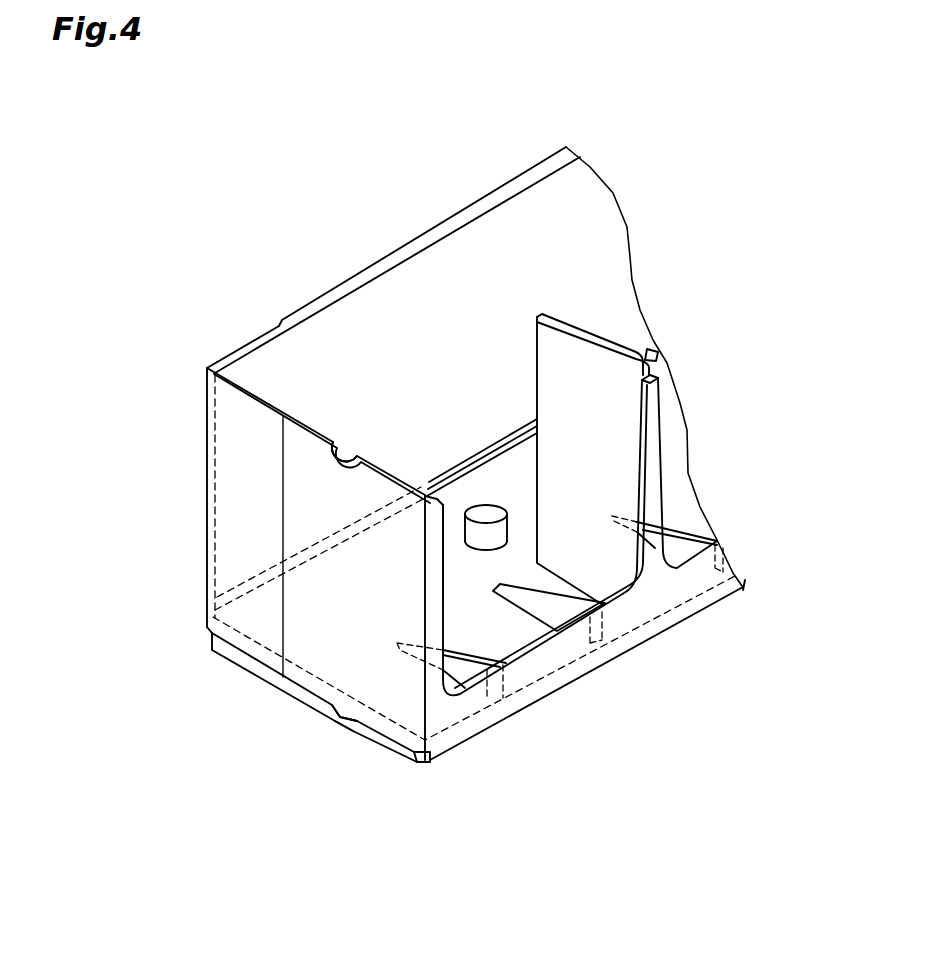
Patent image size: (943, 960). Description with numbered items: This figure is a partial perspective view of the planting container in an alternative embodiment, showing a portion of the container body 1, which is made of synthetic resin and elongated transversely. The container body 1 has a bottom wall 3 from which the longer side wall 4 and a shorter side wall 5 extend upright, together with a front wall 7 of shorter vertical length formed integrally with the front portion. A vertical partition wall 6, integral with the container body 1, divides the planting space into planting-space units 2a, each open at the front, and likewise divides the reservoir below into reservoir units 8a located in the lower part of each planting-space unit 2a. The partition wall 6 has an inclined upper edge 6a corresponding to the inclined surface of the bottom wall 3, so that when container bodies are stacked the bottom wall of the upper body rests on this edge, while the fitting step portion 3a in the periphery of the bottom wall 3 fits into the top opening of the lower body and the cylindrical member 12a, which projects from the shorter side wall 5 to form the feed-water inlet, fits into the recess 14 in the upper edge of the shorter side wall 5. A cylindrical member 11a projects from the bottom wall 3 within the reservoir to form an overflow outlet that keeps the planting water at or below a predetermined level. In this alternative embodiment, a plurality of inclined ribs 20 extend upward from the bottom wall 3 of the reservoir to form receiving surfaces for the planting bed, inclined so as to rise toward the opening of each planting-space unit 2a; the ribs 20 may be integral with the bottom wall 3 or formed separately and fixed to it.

The container body 1 is at (725, 643).
The planting-space unit 2a is at (505, 620).
The bottom wall 3 is at (533, 632).
The fitting step portion 3a is at (418, 763).
The longer side wall 4 is at (433, 296).
The shorter side wall 5 is at (238, 507).
The partition wall 6 is at (566, 421).
The inclined upper edge 6a is at (592, 333).
The front wall 7 is at (493, 720).
The reservoir unit 8a is at (455, 520).
The cylindrical member 11a is at (488, 510).
The cylindrical member 12a is at (343, 716).
The recess 14 is at (348, 441).
The inclined rib 20 is at (482, 657).